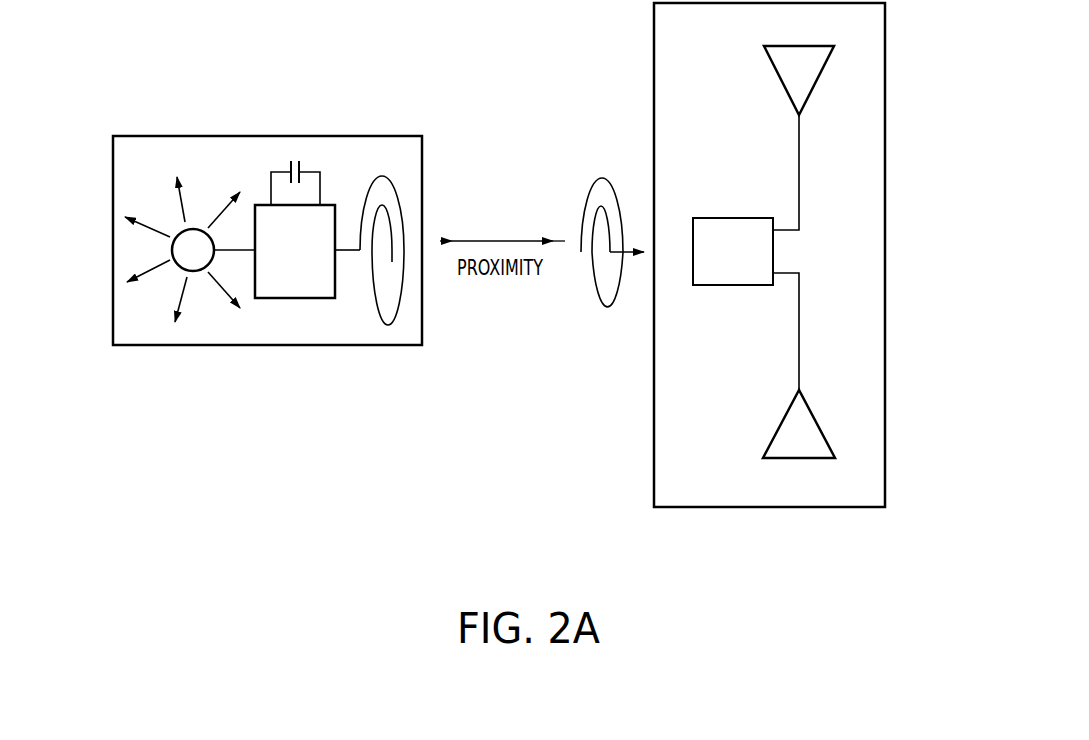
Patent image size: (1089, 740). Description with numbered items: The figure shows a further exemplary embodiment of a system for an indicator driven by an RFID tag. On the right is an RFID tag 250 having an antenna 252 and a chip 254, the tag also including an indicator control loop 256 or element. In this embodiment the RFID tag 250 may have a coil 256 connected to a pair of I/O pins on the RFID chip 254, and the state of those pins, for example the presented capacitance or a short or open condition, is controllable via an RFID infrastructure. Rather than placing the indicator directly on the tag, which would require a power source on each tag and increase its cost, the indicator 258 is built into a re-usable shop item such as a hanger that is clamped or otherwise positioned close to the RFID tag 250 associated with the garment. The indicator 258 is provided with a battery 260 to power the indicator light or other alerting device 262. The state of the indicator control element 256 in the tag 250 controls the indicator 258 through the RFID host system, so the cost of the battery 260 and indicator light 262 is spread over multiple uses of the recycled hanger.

The RFID tag 250 is at (873, 128).
The antenna 252 is at (777, 73).
The chip 254 is at (735, 218).
The indicator control loop 256 is at (605, 325).
The indicator 258 is at (217, 345).
The battery 260 is at (320, 287).
The indicator light 262 is at (178, 248).